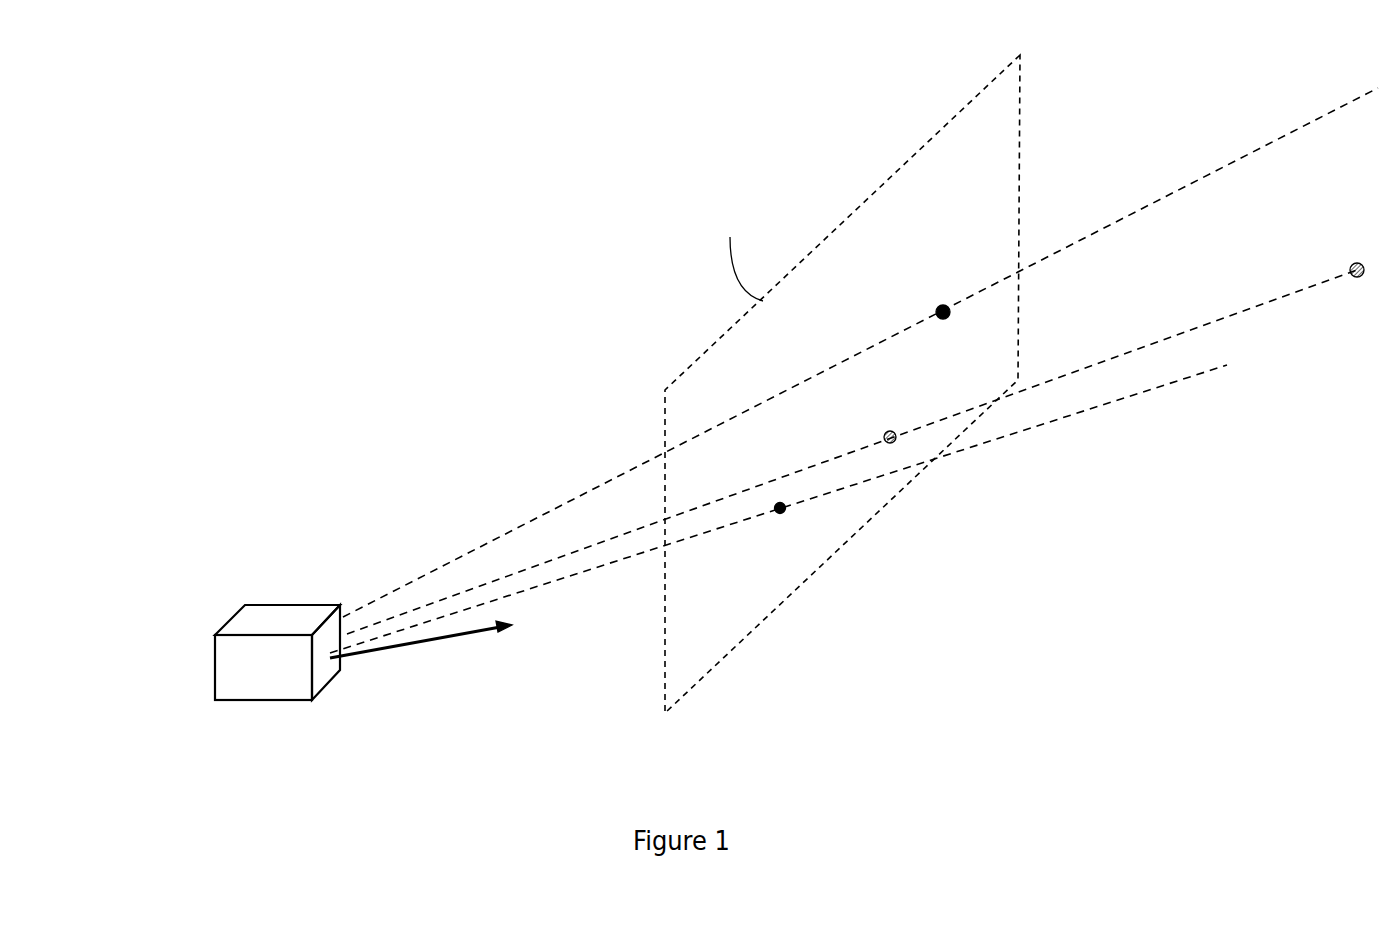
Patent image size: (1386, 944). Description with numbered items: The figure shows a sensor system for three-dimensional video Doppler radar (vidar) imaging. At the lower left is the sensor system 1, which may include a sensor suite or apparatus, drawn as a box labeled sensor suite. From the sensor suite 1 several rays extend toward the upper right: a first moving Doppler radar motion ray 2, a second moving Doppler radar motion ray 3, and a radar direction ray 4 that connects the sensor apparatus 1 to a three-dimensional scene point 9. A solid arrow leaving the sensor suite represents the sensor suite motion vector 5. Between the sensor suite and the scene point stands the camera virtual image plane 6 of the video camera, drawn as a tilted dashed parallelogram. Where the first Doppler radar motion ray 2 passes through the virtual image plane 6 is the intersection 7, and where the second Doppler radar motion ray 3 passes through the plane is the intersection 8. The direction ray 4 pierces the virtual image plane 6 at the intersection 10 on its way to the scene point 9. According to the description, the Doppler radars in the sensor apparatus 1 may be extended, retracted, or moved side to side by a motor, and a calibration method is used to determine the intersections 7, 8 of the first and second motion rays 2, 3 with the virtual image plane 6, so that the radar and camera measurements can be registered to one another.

The sensor system 1 is at (235, 677).
The first moving Doppler radar motion ray 2 is at (556, 513).
The second moving Doppler radar motion ray 3 is at (600, 564).
The radar direction ray 4 is at (627, 533).
The sensor suite motion vector 5 is at (445, 640).
The camera virtual image plane 6 is at (990, 162).
The intersection of the first Doppler radar motion ray with the virtual image plane 7 is at (947, 318).
The intersection of the second Doppler radar motion ray with the virtual image plane 8 is at (772, 511).
The 3D scene point 9 is at (1351, 264).
The intersection of the direction ray with the virtual image plane 10 is at (884, 438).